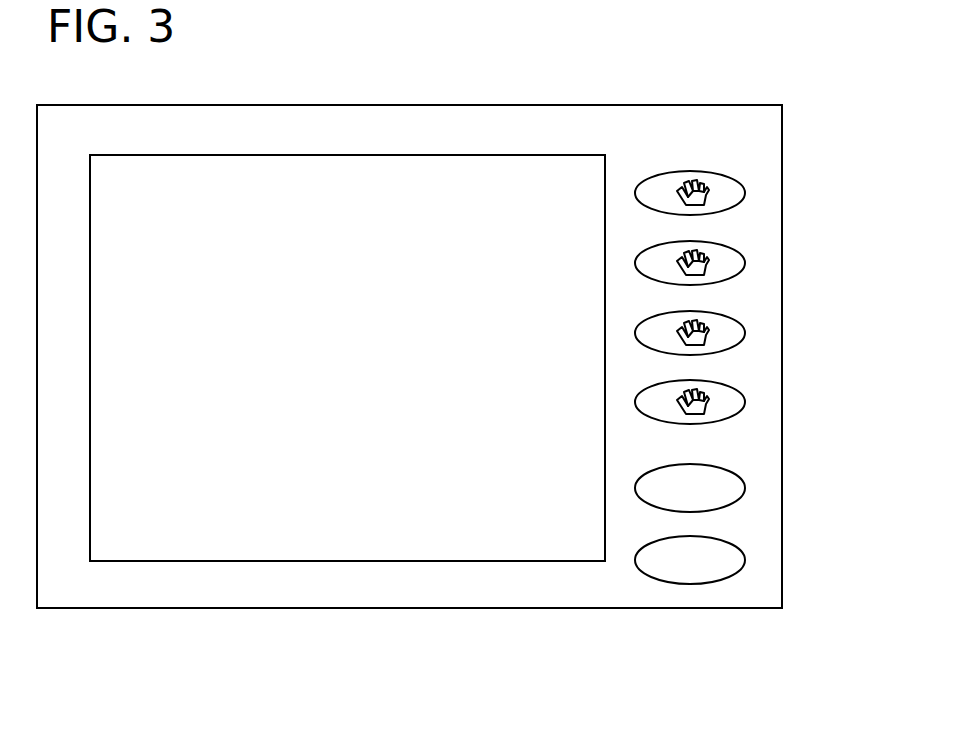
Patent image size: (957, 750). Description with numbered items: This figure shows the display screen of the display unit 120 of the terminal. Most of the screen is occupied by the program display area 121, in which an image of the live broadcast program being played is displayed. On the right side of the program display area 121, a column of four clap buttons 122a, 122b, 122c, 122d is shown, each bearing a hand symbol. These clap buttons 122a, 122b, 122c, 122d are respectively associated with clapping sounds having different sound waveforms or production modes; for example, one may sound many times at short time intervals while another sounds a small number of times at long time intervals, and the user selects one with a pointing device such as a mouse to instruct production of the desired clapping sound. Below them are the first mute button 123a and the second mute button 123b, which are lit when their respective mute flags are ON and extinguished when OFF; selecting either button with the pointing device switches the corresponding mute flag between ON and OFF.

The display unit 120 is at (350, 105).
The program display area 121 is at (270, 155).
The clap button 122a is at (745, 193).
The clap button 122b is at (745, 263).
The clap button 122c is at (745, 333).
The clap button 122d is at (745, 402).
The first mute button 123a is at (745, 488).
The second mute button 123b is at (745, 560).